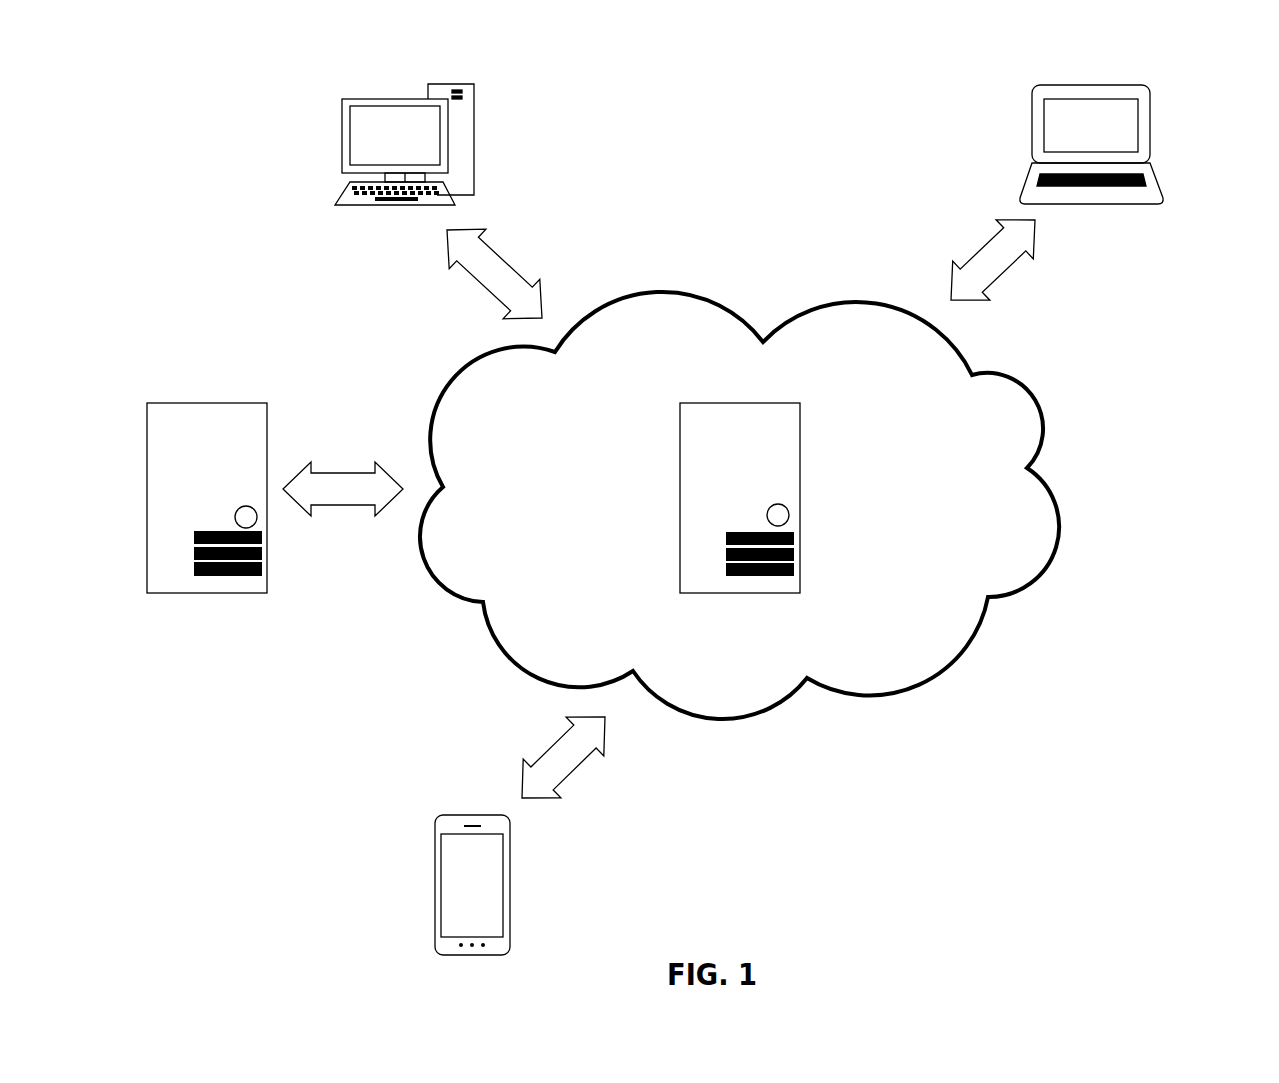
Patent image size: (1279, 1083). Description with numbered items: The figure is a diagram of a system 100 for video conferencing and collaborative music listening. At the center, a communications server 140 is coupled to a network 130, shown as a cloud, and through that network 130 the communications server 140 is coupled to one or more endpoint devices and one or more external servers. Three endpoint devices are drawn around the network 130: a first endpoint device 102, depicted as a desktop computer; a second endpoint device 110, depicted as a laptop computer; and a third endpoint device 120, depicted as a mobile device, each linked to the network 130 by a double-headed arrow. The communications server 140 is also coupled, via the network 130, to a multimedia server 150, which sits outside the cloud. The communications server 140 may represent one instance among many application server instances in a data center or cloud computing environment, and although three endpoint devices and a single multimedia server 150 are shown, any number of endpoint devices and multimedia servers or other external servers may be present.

The system 100 is at (122, 101).
The first endpoint device 102 is at (489, 117).
The second endpoint device 110 is at (1165, 132).
The third endpoint device 120 is at (532, 862).
The network 130 is at (944, 697).
The communications server 140 is at (729, 429).
The multimedia server 150 is at (197, 429).